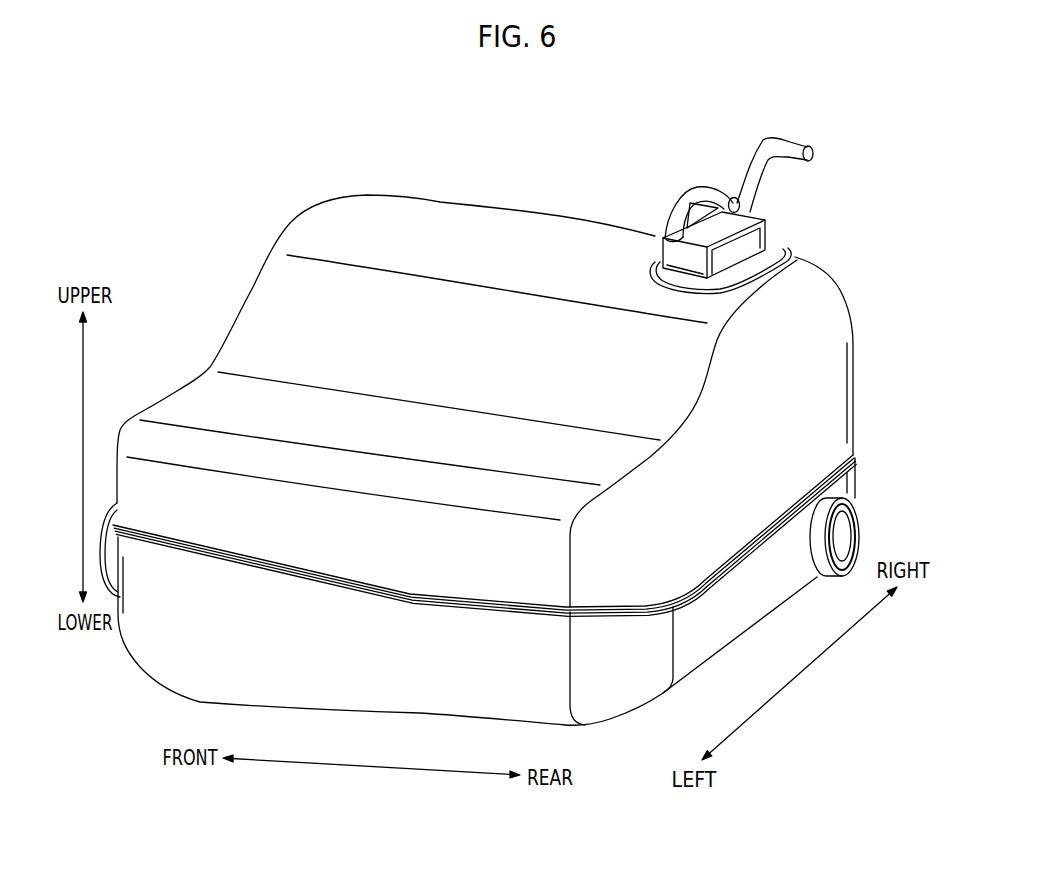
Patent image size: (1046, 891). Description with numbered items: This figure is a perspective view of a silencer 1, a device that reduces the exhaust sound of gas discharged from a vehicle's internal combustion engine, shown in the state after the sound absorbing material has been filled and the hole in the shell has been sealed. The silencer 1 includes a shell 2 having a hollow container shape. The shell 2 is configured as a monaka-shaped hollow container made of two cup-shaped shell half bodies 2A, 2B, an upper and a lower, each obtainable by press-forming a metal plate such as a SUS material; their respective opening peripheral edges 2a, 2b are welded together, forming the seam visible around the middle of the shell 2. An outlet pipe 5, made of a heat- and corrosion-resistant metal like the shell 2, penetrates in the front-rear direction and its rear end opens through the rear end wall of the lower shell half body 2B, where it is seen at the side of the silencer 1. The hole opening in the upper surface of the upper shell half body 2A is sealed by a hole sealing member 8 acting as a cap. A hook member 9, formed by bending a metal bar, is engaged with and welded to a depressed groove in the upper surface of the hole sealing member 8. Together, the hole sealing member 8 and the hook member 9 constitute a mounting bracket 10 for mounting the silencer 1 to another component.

The silencer 1 is at (560, 207).
The shell 2 is at (914, 351).
The shell half body 2A is at (793, 384).
The shell half body 2B is at (857, 487).
The opening peripheral edge 2a is at (740, 550).
The opening peripheral edge 2b is at (727, 574).
The outlet pipe 5 is at (858, 533).
The hole sealing member 8 is at (750, 240).
The hook member 9 is at (750, 170).
The mounting bracket 10 is at (790, 186).